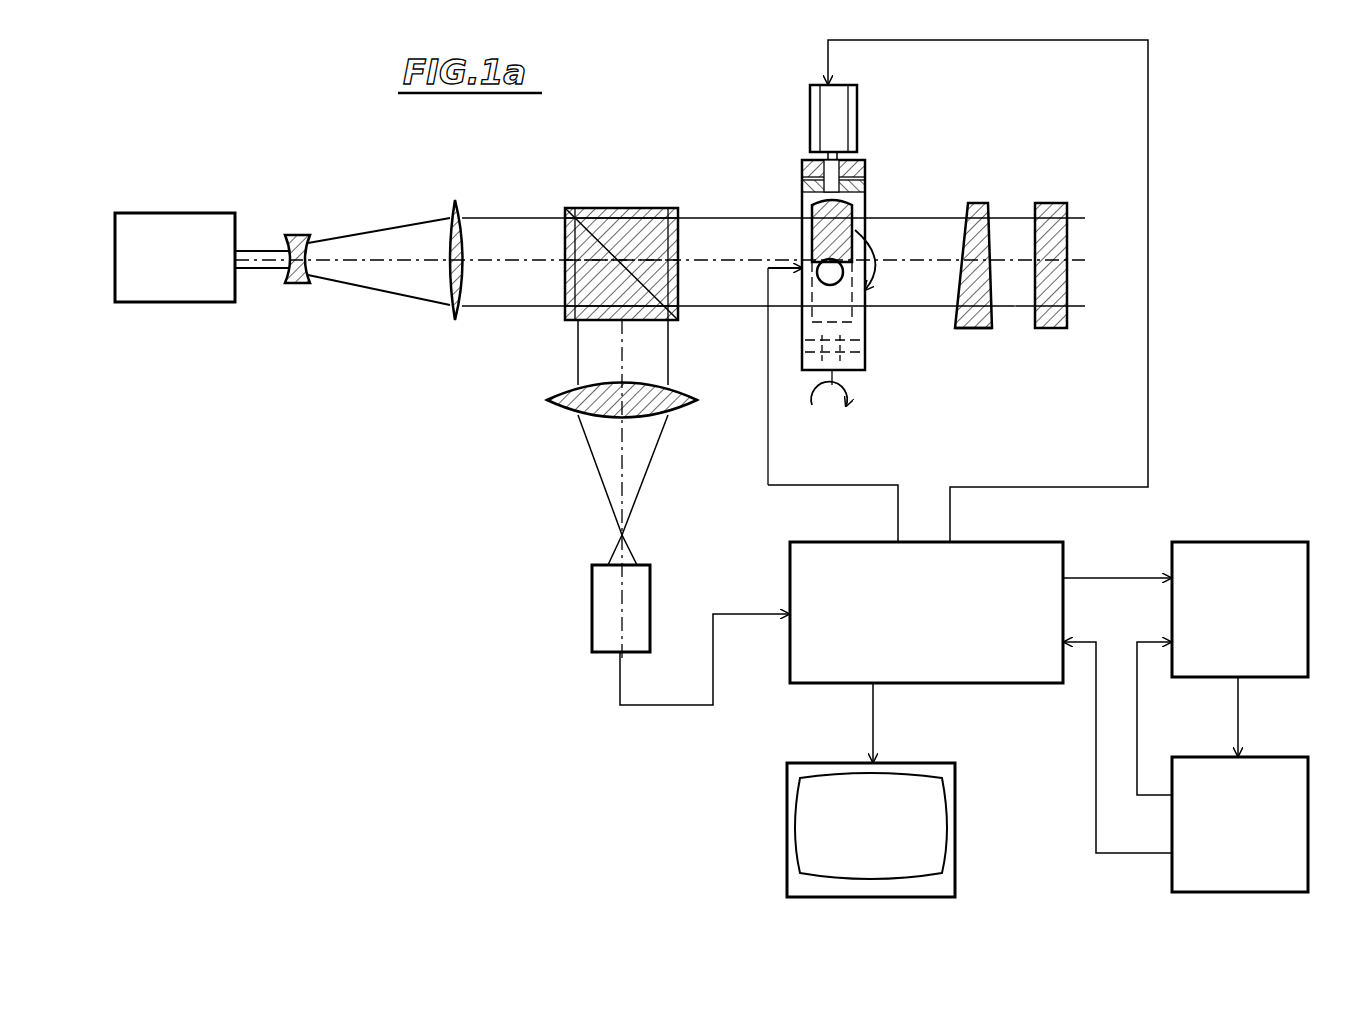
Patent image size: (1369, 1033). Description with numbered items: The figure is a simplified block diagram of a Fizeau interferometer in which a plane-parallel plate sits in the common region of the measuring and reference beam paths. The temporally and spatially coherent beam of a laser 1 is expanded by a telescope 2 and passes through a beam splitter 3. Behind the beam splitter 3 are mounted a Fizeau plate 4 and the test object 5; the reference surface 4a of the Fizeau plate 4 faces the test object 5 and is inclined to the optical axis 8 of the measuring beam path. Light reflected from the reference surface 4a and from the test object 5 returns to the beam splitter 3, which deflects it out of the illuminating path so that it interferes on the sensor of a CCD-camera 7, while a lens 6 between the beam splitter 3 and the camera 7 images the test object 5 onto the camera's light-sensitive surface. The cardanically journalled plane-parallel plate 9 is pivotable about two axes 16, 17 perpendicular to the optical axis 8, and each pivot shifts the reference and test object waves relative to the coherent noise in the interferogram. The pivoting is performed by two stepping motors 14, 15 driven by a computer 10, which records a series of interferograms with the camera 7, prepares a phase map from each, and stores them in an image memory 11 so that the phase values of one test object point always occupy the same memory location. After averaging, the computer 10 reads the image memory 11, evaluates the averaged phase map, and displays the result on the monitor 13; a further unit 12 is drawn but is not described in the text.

The laser 1 is at (163, 291).
The telescope 2 is at (447, 313).
The beam splitter 3 is at (622, 207).
The Fizeau plate 4 is at (978, 206).
The reference surface 4a is at (990, 330).
The test object 5 is at (1065, 222).
The lens 6 is at (683, 403).
The CCD-camera 7 is at (640, 575).
The optical axis 8 is at (1018, 265).
The plane-parallel plate 9 is at (852, 225).
The computer 10 is at (1048, 555).
The image memory 11 is at (1200, 540).
The drive / evaluation unit 12 is at (1292, 793).
The monitor 13 is at (955, 788).
The stepping motor 14 is at (845, 122).
The stepping motor 15 is at (800, 272).
The pivot axis 16 is at (832, 405).
The pivot axis 17 is at (845, 285).